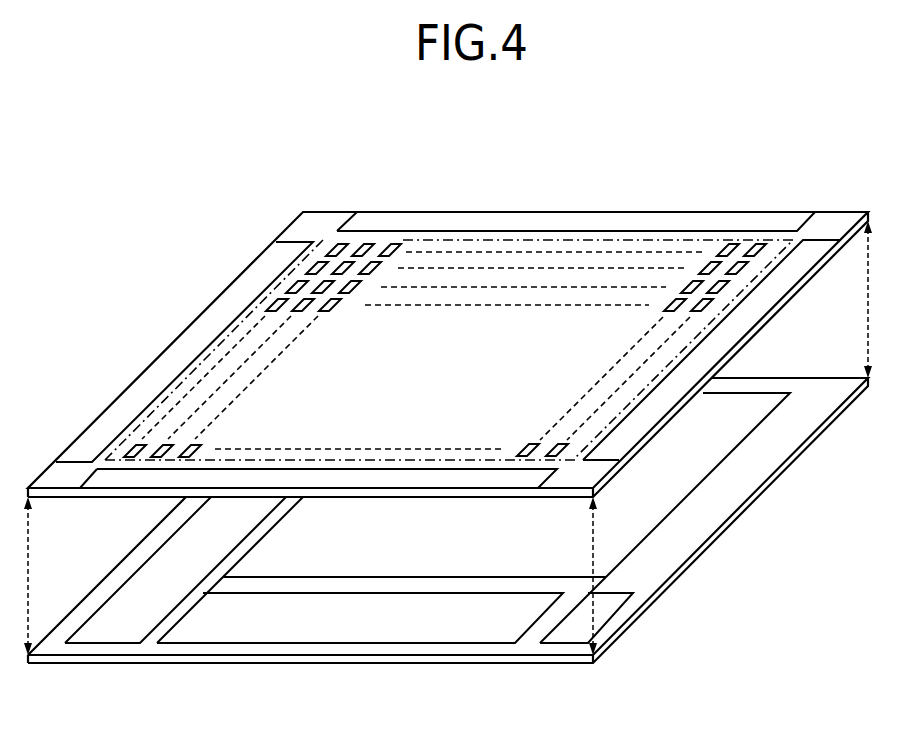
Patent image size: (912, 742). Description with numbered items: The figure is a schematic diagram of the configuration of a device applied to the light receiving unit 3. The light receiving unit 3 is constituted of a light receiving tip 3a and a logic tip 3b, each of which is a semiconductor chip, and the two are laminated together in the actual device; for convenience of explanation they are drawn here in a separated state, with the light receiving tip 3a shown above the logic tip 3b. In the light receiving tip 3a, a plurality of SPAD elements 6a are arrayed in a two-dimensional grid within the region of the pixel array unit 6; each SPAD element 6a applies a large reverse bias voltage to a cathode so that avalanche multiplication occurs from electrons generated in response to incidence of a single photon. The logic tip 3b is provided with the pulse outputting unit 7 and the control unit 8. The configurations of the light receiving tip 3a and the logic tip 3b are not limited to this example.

The light receiving unit 3 is at (250, 240).
The light receiving tip 3a is at (836, 231).
The logic tip 3b is at (757, 502).
The pixel array unit 6 is at (520, 249).
The SPAD element 6a is at (357, 291).
The pulse outputting unit 7 is at (688, 478).
The control unit 8 is at (115, 607).